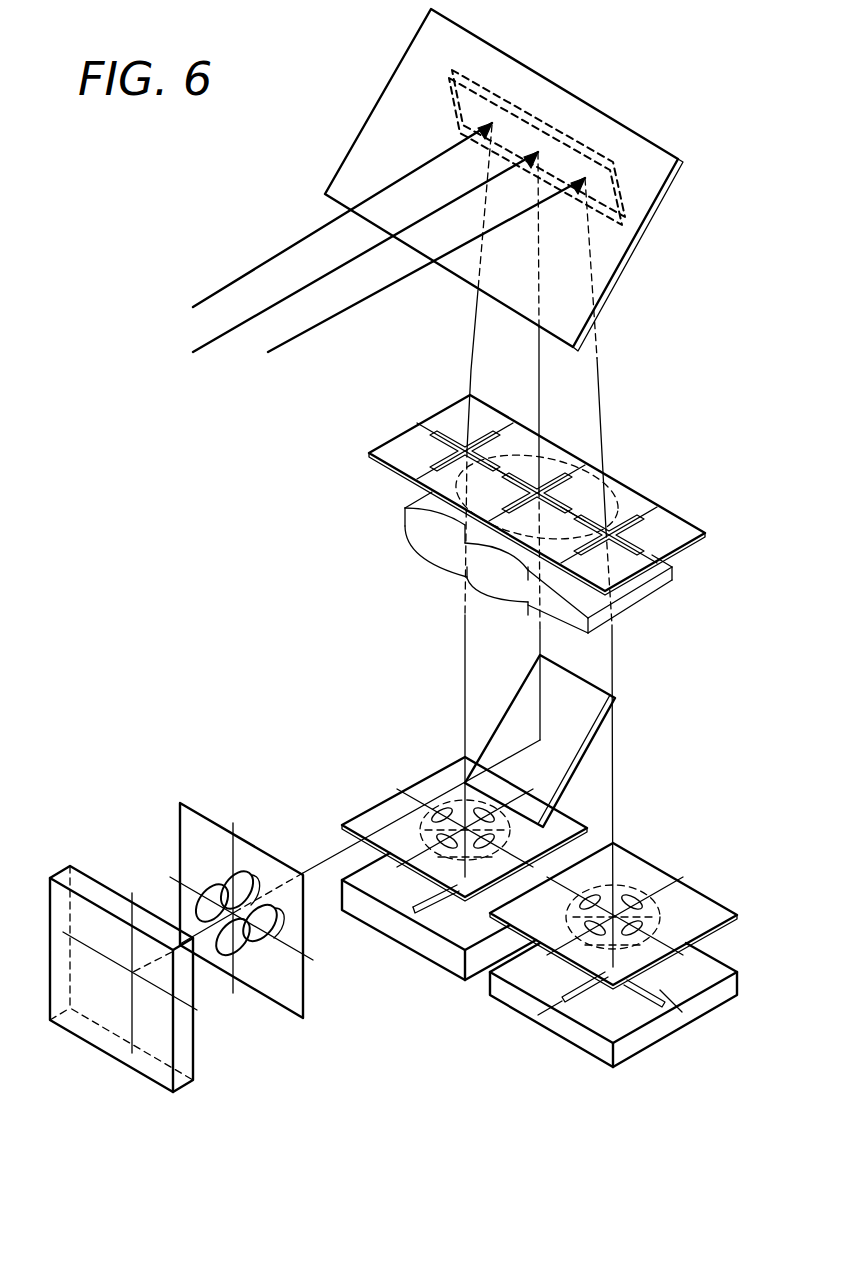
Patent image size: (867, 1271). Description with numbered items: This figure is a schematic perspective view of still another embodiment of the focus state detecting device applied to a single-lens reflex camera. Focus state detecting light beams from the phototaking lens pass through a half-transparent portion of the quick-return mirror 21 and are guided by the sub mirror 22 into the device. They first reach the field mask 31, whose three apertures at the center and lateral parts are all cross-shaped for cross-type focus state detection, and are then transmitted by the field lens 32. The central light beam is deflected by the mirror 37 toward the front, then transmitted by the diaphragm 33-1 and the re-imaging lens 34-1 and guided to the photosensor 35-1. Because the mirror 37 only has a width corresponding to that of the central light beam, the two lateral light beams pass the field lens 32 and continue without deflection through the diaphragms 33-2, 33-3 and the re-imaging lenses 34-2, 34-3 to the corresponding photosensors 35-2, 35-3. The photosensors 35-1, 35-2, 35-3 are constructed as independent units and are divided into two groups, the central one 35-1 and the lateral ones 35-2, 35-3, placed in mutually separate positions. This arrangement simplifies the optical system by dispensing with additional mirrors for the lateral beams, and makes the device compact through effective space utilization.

The quick-return mirror 21 is at (608, 257).
The sub mirror 22 is at (565, 152).
The field mask 31 is at (677, 525).
The field lens 32 is at (643, 597).
The mirror 37 is at (582, 715).
The diaphragm 33-1 is at (293, 982).
The diaphragm 33-2 is at (445, 775).
The diaphragm 33-3 is at (630, 865).
The re-imaging lens 34-1 is at (237, 970).
The re-imaging lens 34-2 is at (400, 815).
The re-imaging lens 34-3 is at (652, 927).
The photosensor 35-1 is at (102, 1035).
The photosensor 35-2 is at (362, 882).
The photosensor 35-3 is at (568, 1027).